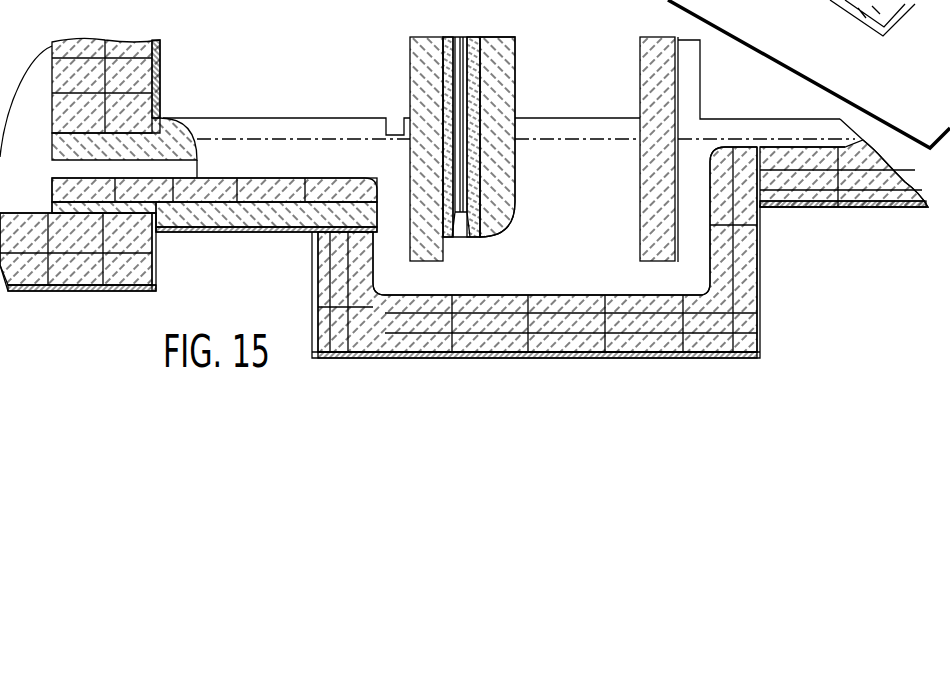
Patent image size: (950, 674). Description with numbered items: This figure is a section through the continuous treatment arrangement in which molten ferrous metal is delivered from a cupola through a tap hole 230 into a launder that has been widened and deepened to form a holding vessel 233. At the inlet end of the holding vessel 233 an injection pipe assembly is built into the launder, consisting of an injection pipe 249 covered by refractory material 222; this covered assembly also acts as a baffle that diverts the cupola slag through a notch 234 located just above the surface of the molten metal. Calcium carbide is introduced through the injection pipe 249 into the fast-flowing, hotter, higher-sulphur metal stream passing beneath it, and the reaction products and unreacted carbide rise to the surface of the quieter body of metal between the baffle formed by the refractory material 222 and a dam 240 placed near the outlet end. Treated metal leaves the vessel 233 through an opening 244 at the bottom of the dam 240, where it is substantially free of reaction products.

The refractory material 222 is at (423, 70).
The tap hole 230 is at (180, 170).
The holding vessel 233 is at (743, 331).
The notch 234 is at (397, 117).
The dam 240 is at (648, 62).
The opening 244 is at (652, 275).
The injection pipe 249 is at (470, 55).